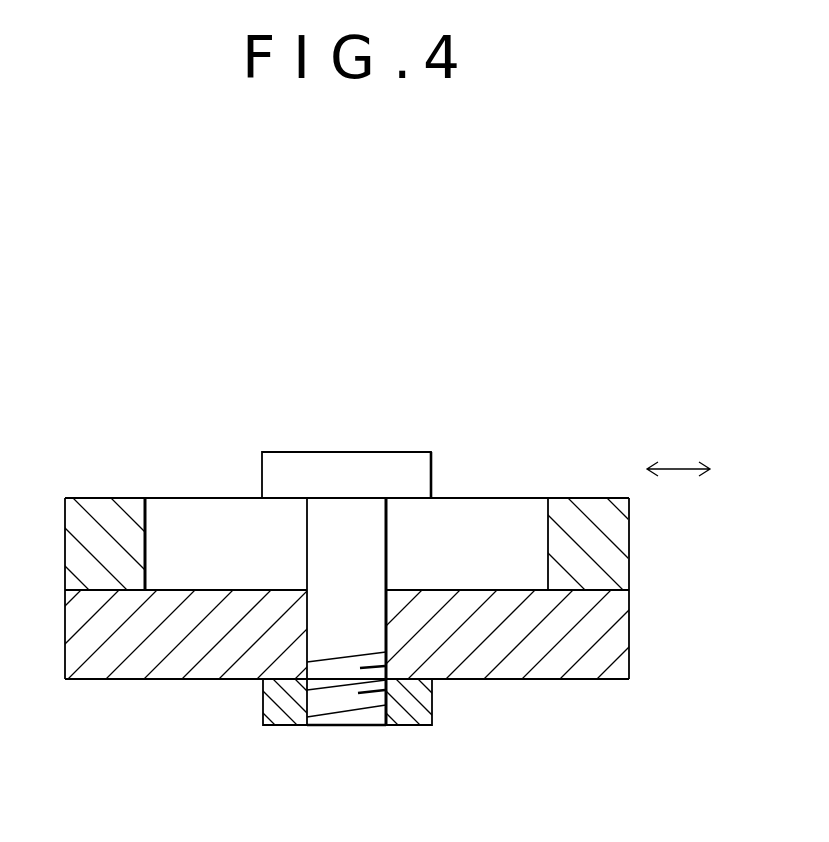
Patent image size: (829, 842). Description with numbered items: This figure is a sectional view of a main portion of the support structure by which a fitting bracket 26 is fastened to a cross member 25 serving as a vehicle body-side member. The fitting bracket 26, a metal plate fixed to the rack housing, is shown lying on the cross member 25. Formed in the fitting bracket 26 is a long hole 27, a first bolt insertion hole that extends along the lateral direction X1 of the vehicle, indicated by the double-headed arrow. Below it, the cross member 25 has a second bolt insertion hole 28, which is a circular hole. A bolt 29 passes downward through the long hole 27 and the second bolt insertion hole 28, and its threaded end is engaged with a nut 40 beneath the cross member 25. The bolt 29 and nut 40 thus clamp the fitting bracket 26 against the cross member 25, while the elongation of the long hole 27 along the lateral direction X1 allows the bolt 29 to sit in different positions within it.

The cross member 25 is at (138, 695).
The fitting bracket 26 is at (105, 484).
The long hole 27 is at (548, 540).
The second bolt insertion hole 28 is at (306, 650).
The bolt 29 is at (362, 466).
The nut 40 is at (432, 708).
The lateral direction X1 is at (681, 468).